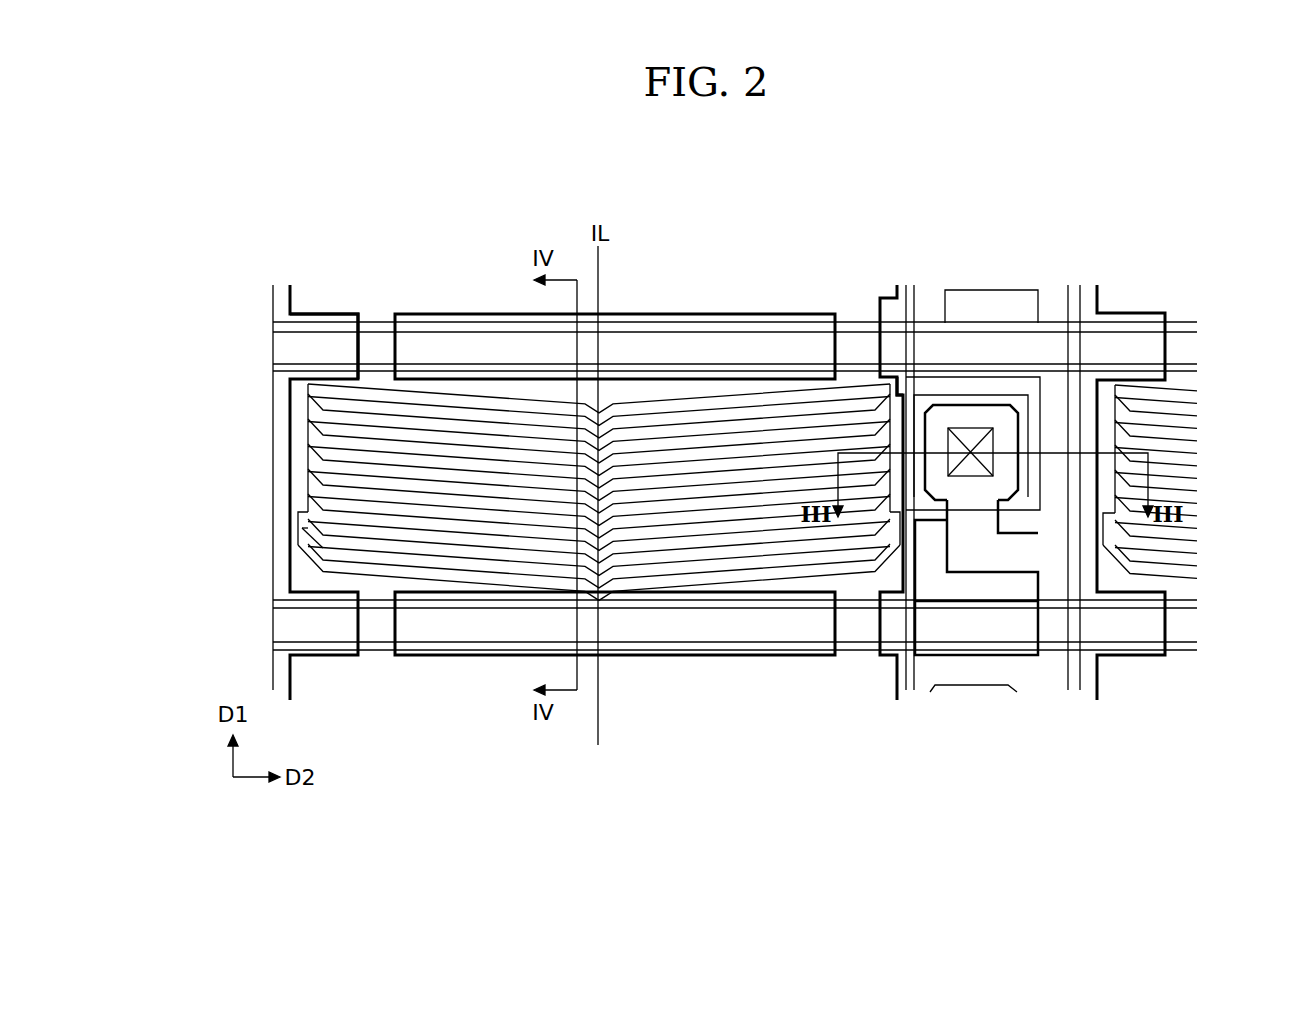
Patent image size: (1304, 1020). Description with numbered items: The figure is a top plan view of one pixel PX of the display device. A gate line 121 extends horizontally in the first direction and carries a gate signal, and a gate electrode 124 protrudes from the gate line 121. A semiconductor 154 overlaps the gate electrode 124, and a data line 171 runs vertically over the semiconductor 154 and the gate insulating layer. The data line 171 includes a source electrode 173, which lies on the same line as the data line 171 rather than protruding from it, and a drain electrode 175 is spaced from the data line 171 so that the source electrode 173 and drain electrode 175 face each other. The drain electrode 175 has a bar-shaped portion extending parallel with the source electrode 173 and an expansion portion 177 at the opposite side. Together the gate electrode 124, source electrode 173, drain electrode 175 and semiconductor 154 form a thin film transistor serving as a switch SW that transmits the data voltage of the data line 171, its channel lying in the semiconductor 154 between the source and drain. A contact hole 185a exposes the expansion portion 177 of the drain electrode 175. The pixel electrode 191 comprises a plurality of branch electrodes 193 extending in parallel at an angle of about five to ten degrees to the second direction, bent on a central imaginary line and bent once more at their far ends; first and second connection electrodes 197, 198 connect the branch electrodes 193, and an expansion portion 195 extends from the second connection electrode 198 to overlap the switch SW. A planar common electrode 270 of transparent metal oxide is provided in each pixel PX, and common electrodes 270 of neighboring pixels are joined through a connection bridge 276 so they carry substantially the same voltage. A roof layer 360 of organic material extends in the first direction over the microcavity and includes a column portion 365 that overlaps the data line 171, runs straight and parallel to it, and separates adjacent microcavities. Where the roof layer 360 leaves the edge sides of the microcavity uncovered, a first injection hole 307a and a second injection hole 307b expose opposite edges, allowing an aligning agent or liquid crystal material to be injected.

The gate line 121 is at (1083, 380).
The gate electrode 124 is at (958, 657).
The semiconductor 154 is at (1043, 588).
The data line 171 is at (645, 656).
The source electrode 173 is at (1042, 548).
The drain electrode 175 is at (1042, 497).
The expansion portion 177 is at (1020, 433).
The contact hole 185a is at (983, 428).
The pixel electrode 191 is at (698, 503).
The branch electrodes 193 is at (455, 580).
The expansion portion 195 is at (962, 395).
The first connection electrode 197 is at (299, 527).
The second connection electrode 198 is at (902, 520).
The common electrode 270 is at (465, 379).
The connection bridge 276 is at (358, 342).
The first injection hole 307a is at (270, 408).
The second injection hole 307b is at (915, 391).
The roof layer 360 is at (273, 297).
The column portion 365 is at (285, 343).
The pixel PX is at (272, 557).
The switch SW is at (1084, 560).